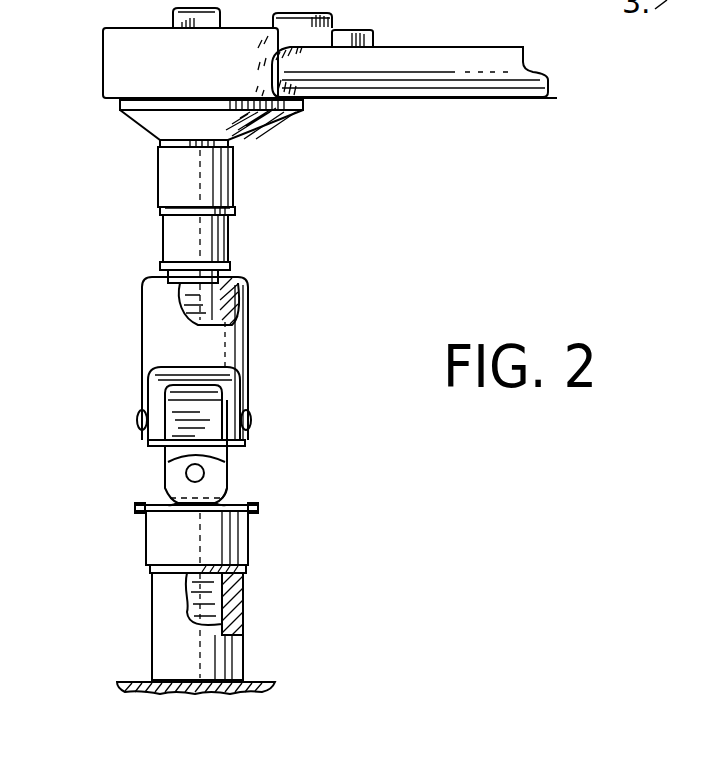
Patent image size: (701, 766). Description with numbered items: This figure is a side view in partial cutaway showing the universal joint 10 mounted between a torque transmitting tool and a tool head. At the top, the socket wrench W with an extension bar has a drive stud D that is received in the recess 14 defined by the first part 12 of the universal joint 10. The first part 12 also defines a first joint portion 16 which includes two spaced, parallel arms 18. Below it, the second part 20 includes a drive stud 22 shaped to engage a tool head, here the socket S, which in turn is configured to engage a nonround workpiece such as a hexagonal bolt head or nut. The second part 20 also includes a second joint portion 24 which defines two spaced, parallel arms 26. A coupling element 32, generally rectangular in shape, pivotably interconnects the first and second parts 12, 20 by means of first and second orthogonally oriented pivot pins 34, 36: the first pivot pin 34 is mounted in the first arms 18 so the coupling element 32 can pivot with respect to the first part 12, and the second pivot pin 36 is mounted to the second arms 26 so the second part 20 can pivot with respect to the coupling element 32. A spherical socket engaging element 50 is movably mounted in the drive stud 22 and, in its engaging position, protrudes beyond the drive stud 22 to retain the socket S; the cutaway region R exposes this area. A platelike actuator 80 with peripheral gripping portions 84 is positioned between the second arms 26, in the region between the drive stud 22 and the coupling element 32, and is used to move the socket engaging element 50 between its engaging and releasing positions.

The universal joint 10 is at (137, 302).
The first part 12 is at (250, 330).
The recess 14 is at (228, 242).
The first joint portion 16 is at (133, 423).
The first arms 18 is at (145, 437).
The second part 20 is at (150, 553).
The drive stud 22 is at (214, 608).
The second joint portion 24 is at (238, 490).
The second arms 26 is at (202, 452).
The coupling element 32 is at (247, 400).
The first pivot pin 34 is at (250, 420).
The second pivot pin 36 is at (200, 472).
The socket engaging element 50 is at (243, 608).
The actuator 80 is at (153, 502).
The peripheral gripping portions 84 is at (140, 508).
The drive stud D is at (178, 268).
The socket wrench W is at (288, 100).
The recess R is at (243, 592).
The socket S is at (158, 637).